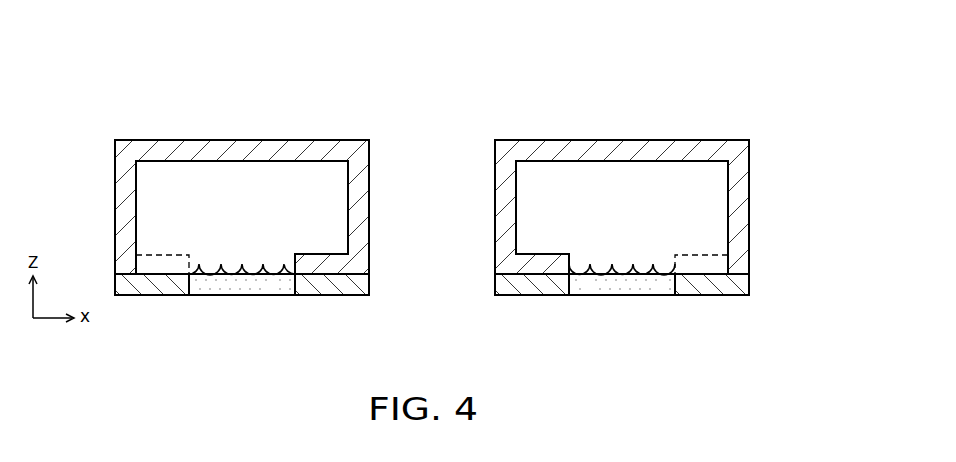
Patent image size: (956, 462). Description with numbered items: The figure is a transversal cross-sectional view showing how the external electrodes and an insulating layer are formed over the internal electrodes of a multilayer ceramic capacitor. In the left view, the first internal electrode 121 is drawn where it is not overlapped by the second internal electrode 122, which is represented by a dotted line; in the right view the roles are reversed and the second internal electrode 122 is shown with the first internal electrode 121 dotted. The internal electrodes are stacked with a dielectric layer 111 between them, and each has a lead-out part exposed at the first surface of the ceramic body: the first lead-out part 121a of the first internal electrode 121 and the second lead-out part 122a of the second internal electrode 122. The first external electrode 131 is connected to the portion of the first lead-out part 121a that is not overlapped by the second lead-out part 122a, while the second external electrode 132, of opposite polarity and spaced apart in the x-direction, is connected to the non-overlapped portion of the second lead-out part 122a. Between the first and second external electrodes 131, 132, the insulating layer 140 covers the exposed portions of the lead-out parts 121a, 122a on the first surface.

The dielectric layer 111 is at (301, 147).
The first internal electrode 121 is at (337, 199).
The first lead-out part 121a is at (276, 268).
The second internal electrode 122 is at (717, 198).
The second lead-out part 122a is at (665, 268).
The first external electrode 131 is at (135, 291).
The second external electrode 132 is at (352, 291).
The insulating layer 140 is at (210, 290).